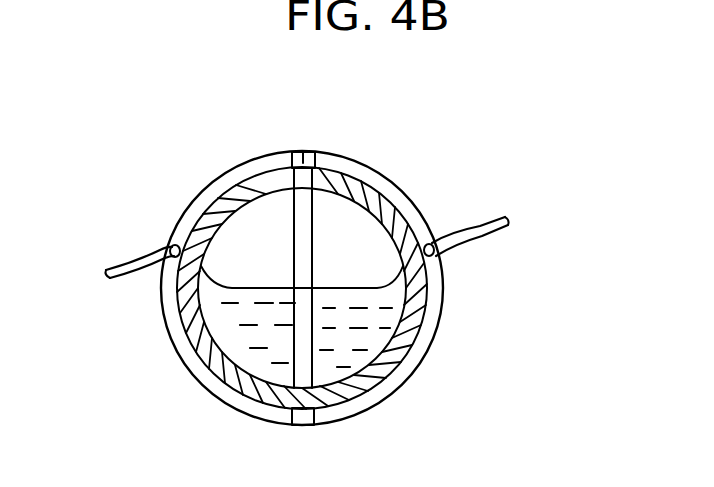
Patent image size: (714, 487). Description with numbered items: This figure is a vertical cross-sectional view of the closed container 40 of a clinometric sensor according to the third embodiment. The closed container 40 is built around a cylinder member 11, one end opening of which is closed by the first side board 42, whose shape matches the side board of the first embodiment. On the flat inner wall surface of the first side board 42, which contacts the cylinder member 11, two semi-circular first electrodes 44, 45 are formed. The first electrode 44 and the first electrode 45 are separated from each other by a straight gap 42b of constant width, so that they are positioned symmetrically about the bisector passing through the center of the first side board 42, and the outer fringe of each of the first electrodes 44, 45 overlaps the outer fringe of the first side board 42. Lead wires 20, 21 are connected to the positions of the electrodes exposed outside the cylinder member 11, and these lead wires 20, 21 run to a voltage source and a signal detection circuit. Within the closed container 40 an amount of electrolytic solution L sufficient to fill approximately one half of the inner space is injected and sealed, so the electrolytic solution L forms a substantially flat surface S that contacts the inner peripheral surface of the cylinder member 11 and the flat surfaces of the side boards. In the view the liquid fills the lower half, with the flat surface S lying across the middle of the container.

The closed container 40 is at (216, 172).
The first side board 42 is at (186, 212).
The straight gap 42b is at (303, 150).
The first electrode 44 is at (193, 358).
The first electrode 45 is at (417, 350).
The cylinder member 11 is at (417, 292).
The flat surface S is at (337, 288).
The electrolytic solution L is at (370, 361).
The lead wire 20 is at (112, 282).
The lead wire 21 is at (497, 231).